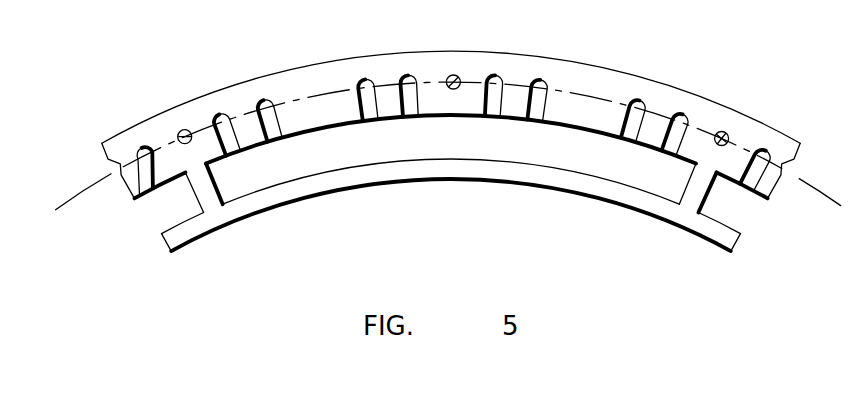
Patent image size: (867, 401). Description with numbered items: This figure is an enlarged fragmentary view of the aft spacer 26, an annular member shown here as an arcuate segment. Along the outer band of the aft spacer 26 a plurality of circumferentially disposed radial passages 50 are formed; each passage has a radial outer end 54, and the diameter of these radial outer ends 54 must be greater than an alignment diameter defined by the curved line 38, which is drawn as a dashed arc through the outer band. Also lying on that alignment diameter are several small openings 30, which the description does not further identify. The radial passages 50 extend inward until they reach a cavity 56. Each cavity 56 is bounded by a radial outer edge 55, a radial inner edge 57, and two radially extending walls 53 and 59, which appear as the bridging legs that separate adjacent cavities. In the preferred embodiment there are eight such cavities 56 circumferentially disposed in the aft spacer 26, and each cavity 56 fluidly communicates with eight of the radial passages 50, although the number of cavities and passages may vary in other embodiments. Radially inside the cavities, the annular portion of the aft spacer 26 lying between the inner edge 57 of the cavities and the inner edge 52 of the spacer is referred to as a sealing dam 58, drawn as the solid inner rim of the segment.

The aft spacer 26 is at (585, 63).
The holes 30 is at (454, 76).
The curved line 38 is at (283, 68).
The radial passages 50 is at (535, 97).
The inner edge of the aft spacer 52 is at (495, 183).
The radially extending wall 53 is at (692, 181).
The radial outer ends 54 is at (495, 74).
The radial outer edge 55 is at (603, 130).
The cavity 56 is at (582, 163).
The radial inner edge 57 is at (433, 160).
The sealing dam 58 is at (340, 183).
The radially extending wall 59 is at (213, 178).